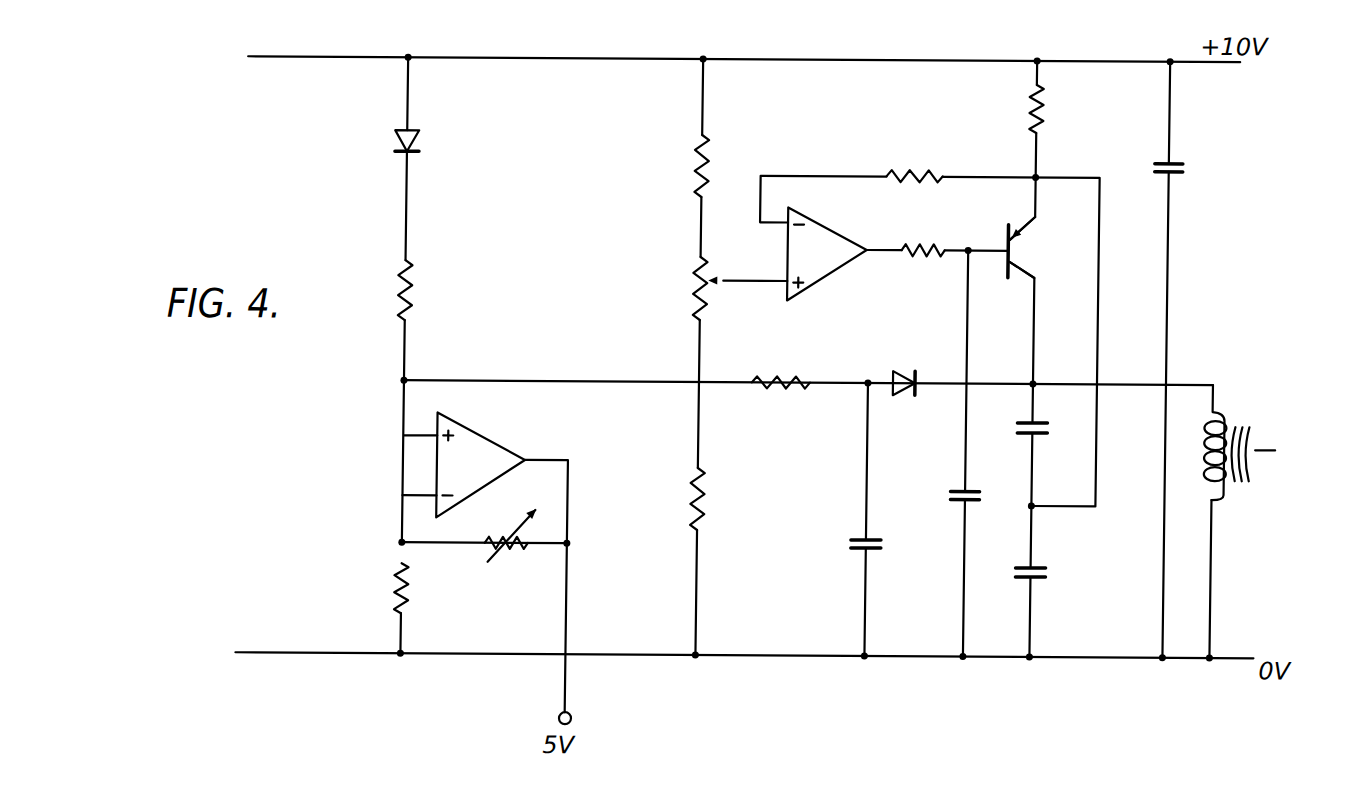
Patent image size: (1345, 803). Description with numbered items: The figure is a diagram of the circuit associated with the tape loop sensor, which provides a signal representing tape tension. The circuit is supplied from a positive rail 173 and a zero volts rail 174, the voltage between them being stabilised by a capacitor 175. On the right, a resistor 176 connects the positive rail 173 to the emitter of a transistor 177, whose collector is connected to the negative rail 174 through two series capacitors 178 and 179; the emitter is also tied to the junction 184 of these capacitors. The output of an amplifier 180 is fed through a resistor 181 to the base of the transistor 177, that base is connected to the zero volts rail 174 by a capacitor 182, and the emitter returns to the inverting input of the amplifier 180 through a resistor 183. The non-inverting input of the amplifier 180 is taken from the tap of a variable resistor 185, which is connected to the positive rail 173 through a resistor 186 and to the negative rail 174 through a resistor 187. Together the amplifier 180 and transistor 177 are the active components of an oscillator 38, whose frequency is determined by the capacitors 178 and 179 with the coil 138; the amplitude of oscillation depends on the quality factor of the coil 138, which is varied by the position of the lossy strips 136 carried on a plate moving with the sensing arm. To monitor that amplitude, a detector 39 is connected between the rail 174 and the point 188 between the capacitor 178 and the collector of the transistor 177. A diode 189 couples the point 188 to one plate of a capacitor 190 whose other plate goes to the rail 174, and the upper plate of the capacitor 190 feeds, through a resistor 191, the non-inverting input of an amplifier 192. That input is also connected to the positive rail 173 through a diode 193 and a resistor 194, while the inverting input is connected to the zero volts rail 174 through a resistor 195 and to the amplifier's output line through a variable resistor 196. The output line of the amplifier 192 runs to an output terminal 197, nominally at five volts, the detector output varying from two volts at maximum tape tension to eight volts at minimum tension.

The oscillator 38 is at (813, 142).
The detector 39 is at (646, 676).
The lossy strips 136 is at (1255, 466).
The coil 138 is at (1228, 413).
The positive rail 173 is at (1108, 53).
The zero volts rail 174 is at (1200, 658).
The capacitor 175 is at (1177, 175).
The resistor 176 is at (1041, 111).
The transistor 177 is at (1021, 245).
The capacitor 178 is at (1016, 428).
The capacitor 179 is at (1040, 581).
The amplifier 180 is at (841, 234).
The resistor 181 is at (928, 231).
The capacitor 182 is at (949, 490).
The resistor 183 is at (922, 154).
The junction 184 is at (1039, 508).
The variable resistor 185 is at (691, 295).
The resistor 186 is at (695, 155).
The resistor 187 is at (709, 492).
The point 188 is at (1028, 376).
The diode 189 is at (893, 371).
The capacitor 190 is at (857, 534).
The resistor 191 is at (770, 371).
The amplifier 192 is at (501, 441).
The diode 193 is at (415, 144).
The resistor 194 is at (419, 292).
The resistor 195 is at (401, 590).
The variable resistor 196 is at (520, 554).
The output terminal 197 is at (563, 720).